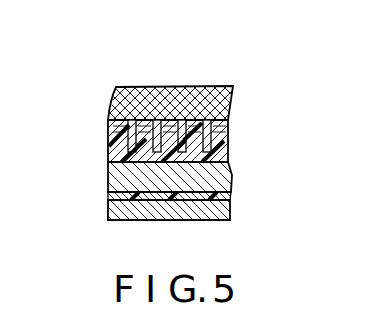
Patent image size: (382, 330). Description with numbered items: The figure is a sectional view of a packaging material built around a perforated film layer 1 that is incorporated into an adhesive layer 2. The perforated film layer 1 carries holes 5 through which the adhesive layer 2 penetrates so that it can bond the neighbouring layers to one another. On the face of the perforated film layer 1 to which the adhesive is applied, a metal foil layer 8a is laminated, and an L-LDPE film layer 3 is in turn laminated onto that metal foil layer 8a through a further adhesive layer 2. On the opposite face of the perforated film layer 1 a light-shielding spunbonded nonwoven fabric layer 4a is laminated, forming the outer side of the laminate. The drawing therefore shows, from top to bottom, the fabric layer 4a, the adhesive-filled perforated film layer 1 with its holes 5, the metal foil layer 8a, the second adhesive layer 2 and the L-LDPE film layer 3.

The perforated film layer 1 is at (228, 134).
The adhesive layer 2 is at (109, 125).
The L-LDPE film layer 3 is at (229, 208).
The light-shielding spunbonded nonwoven fabric layer 4a is at (228, 103).
The holes 5 is at (108, 138).
The metal foil layer 8a is at (231, 168).